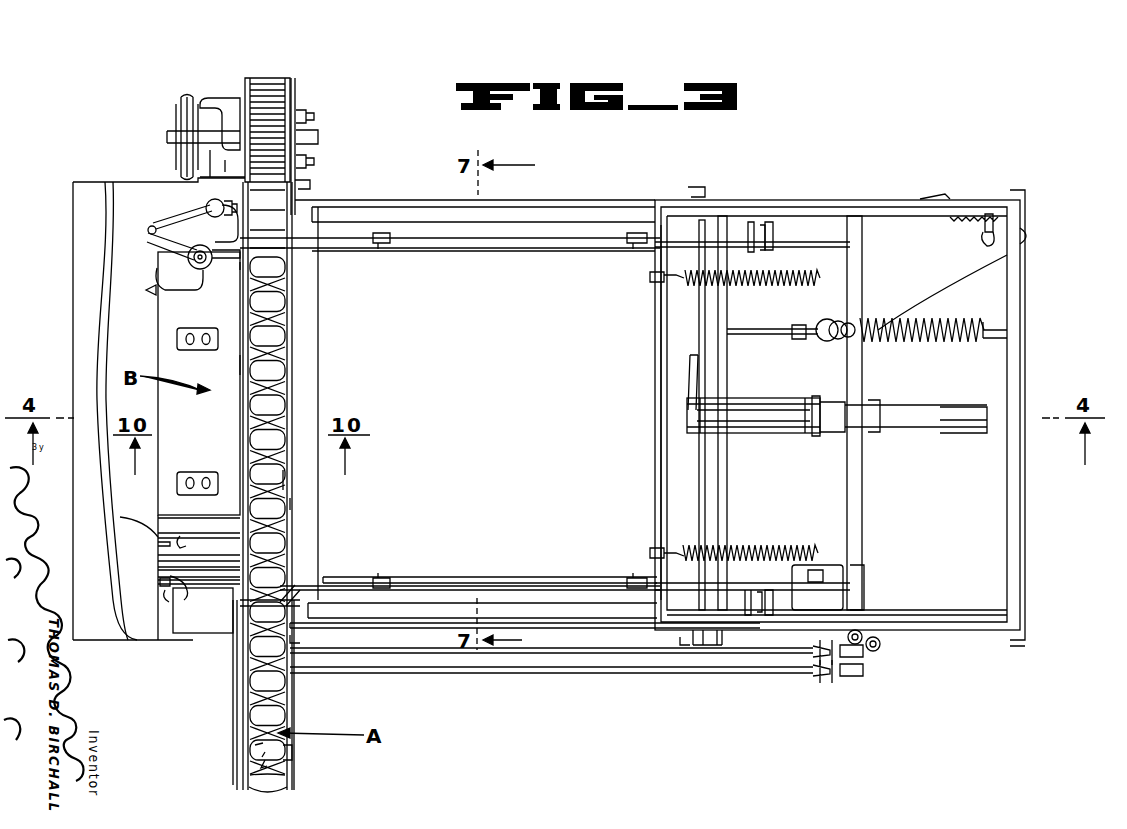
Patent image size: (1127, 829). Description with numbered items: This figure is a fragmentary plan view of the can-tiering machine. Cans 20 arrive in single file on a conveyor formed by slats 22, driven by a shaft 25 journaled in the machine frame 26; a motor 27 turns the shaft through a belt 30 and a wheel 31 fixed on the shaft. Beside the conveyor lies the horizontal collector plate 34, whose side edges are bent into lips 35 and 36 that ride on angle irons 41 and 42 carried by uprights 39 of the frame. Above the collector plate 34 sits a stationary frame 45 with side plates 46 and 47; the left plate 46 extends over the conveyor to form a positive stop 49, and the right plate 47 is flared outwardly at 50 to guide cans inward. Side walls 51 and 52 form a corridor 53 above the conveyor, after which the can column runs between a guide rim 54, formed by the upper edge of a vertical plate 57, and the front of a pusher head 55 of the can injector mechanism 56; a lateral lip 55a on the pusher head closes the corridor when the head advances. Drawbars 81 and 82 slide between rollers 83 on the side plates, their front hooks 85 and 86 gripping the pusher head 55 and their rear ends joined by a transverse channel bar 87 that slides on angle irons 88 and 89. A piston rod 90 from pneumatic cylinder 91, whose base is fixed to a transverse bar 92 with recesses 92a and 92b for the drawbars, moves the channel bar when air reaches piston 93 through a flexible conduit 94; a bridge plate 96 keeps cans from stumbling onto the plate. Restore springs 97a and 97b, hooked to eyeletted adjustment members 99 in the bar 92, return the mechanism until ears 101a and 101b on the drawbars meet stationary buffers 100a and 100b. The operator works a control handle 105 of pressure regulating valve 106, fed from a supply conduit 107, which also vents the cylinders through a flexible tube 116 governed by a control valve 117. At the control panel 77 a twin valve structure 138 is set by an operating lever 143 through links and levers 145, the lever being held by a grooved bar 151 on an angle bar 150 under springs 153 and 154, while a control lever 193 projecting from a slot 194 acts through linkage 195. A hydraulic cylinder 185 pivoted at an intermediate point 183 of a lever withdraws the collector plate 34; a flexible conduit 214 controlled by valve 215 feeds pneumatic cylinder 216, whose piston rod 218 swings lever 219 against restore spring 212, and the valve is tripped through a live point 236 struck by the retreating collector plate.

The cans 20 is at (292, 705).
The slats 22 is at (280, 325).
The drive shaft 25 is at (168, 137).
The machine frame 26 is at (300, 84).
The motor 27 is at (222, 106).
The belt 30 is at (188, 95).
The wheel 31 is at (178, 107).
The collector plate 34 is at (510, 402).
The lip 35 is at (566, 218).
The lip 36 is at (600, 612).
The uprights 39 is at (305, 185).
The angle iron 41 is at (440, 172).
The angle iron 42 is at (405, 630).
The stationary frame 45 is at (453, 568).
The side plate 46 is at (500, 252).
The side plate 47 is at (541, 580).
The positive stop 49 is at (292, 268).
The outwardly flared lip 50 is at (300, 590).
The side wall 51 is at (293, 756).
The side wall 52 is at (255, 746).
The corridor 53 is at (266, 760).
The guide rim 54 is at (292, 483).
The pusher head 55 is at (242, 365).
The lateral lip 55a is at (157, 551).
The can injector mechanism 56 is at (850, 492).
The rectangular plate 57 is at (292, 501).
The control panel 77 is at (216, 435).
The drawbar 81 is at (568, 243).
The drawbar 82 is at (587, 587).
The rollers 83 is at (385, 243).
The hook 85 is at (207, 298).
The hook 86 is at (160, 519).
The transverse channel bar 87 is at (862, 497).
The angle iron 88 is at (820, 210).
The angle iron 89 is at (962, 622).
The piston rod 90 is at (840, 433).
The pneumatic cylinder 91 is at (773, 433).
The transverse bar 92 is at (660, 437).
The recess 92a is at (650, 278).
The recess 92b is at (655, 580).
The piston 93 is at (722, 440).
The flexible conduit 94 is at (688, 370).
The bridge plate 96 is at (318, 370).
The restore spring 97a is at (790, 288).
The restore spring 97b is at (758, 547).
The eyeletted adjustment members 99 is at (660, 280).
The stationary buffer 100a is at (750, 240).
The stationary buffer 100b is at (760, 650).
The ear 101a is at (772, 230).
The ear 101b is at (772, 610).
The control handle 105 is at (157, 225).
The pressure regulating valve 106 is at (185, 258).
The conduit 107 is at (208, 202).
The flexible tube 116 is at (157, 268).
The control valve 117 is at (146, 289).
The twin valve structure 138 is at (825, 600).
The operating lever 143 is at (168, 583).
The train of links and levers 145 is at (606, 655).
The angle bar 150 is at (160, 566).
The bar 151 is at (160, 582).
The spring 153 is at (188, 594).
The spring 154 is at (232, 590).
The intermediate point 183 is at (965, 405).
The hydraulic cylinder 185 is at (870, 432).
The control lever 193 is at (193, 549).
The slot 194 is at (120, 517).
The train of links and levers 195 is at (527, 672).
The restore spring 212 is at (990, 328).
The flexible conduit 214 is at (930, 282).
The valve 215 is at (982, 206).
The pneumatic cylinder 216 is at (915, 318).
The piston rod 218 is at (812, 328).
The lever 219 is at (770, 336).
The live point 236 is at (985, 242).